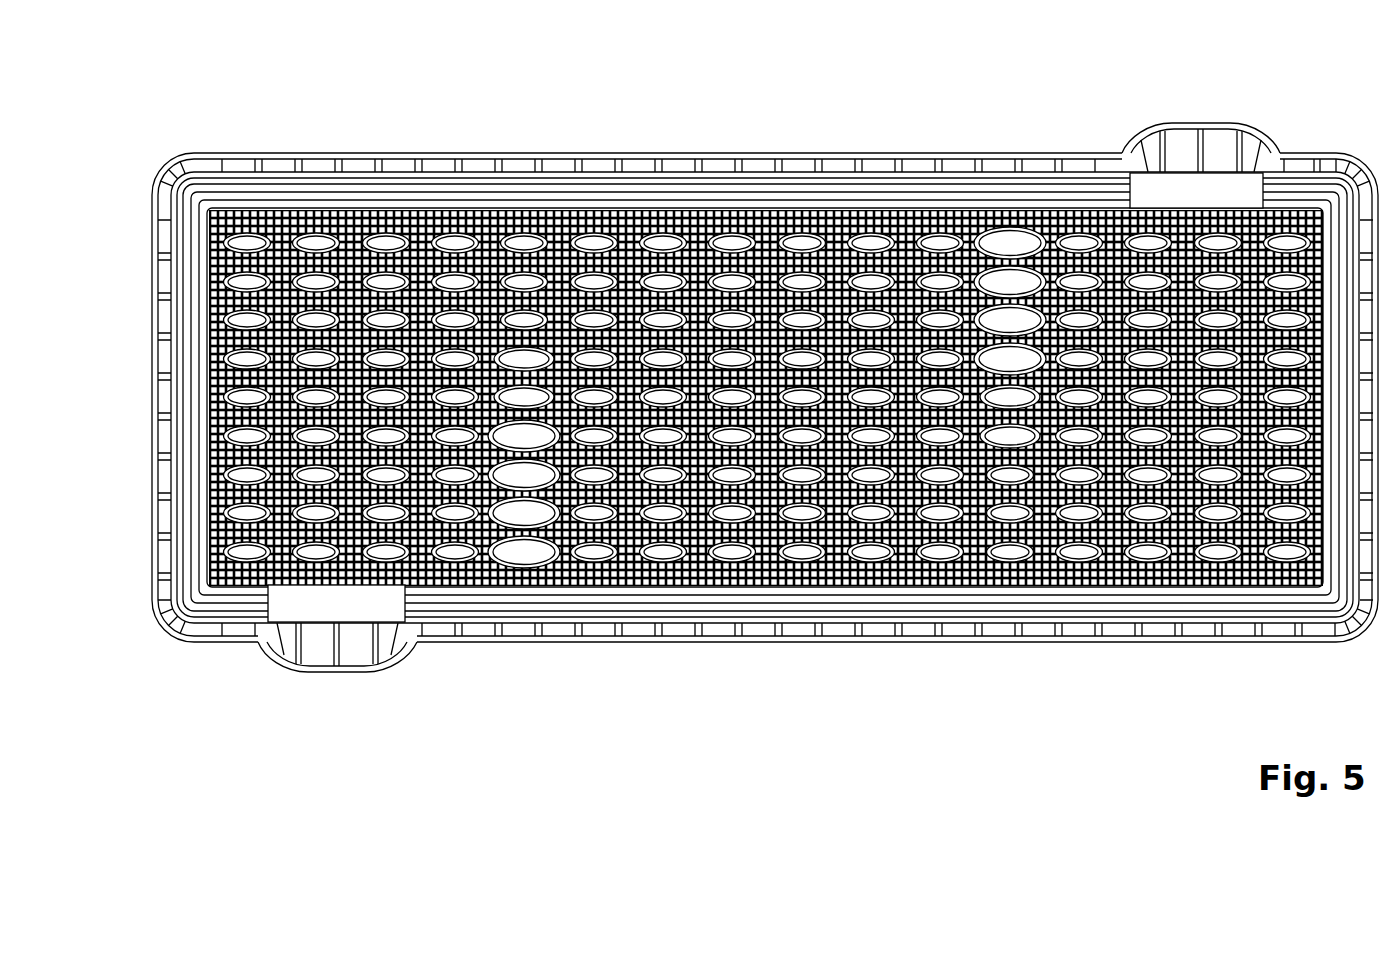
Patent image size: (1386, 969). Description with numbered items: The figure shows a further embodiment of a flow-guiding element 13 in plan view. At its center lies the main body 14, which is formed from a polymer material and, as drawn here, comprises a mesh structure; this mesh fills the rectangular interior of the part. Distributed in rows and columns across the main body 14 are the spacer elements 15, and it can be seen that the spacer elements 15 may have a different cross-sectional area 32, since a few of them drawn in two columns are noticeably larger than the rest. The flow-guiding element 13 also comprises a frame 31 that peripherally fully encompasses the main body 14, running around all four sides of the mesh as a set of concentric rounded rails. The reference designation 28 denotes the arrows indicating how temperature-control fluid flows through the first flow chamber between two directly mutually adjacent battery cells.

The flow-guiding element 13 is at (934, 96).
The main body 14 is at (835, 220).
The spacer elements 15 is at (799, 237).
The arrows 28 is at (1062, 167).
The frame 31 is at (663, 188).
The cross-sectional area 32 is at (996, 244).